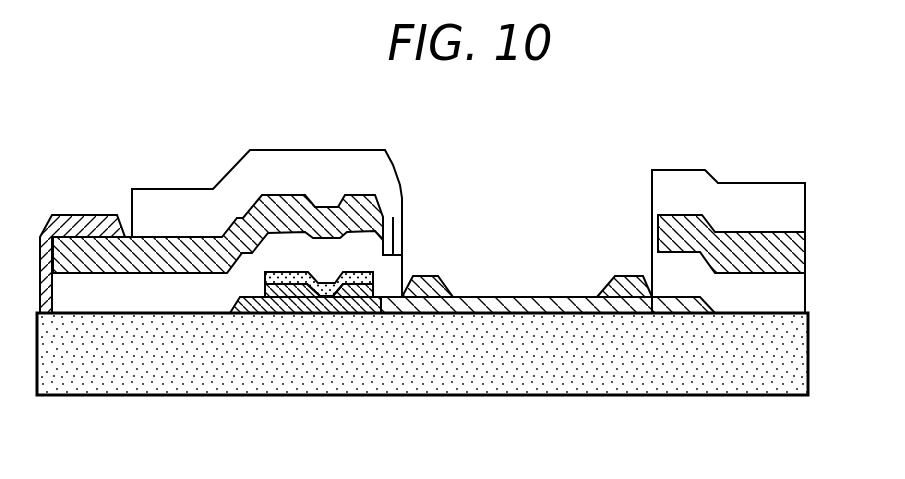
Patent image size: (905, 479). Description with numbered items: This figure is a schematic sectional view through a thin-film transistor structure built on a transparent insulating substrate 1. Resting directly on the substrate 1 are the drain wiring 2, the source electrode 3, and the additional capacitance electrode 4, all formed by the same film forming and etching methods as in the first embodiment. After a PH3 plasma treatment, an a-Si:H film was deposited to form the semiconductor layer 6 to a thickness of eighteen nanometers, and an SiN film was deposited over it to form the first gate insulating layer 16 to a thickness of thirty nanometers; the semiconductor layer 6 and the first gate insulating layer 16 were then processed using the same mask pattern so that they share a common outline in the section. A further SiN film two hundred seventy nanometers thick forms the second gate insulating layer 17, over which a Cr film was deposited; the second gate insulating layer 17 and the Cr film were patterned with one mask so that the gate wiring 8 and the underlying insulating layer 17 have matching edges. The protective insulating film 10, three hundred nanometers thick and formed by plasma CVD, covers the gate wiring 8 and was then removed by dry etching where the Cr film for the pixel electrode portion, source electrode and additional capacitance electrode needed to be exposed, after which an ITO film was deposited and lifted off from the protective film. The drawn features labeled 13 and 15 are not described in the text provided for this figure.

The transparent insulating substrate 1 is at (456, 372).
The drain wiring 2 is at (245, 315).
The source electrode 3 is at (380, 313).
The additional capacitance electrode 4 is at (660, 300).
The semiconductor layer 6 is at (322, 300).
The gate wiring 8 is at (652, 225).
The protective insulating film 10 is at (652, 190).
The insulating film 13 is at (527, 303).
The pixel electrode 15 is at (80, 220).
The first gate insulating layer 16 is at (283, 283).
The second gate insulating layer 17 is at (655, 263).